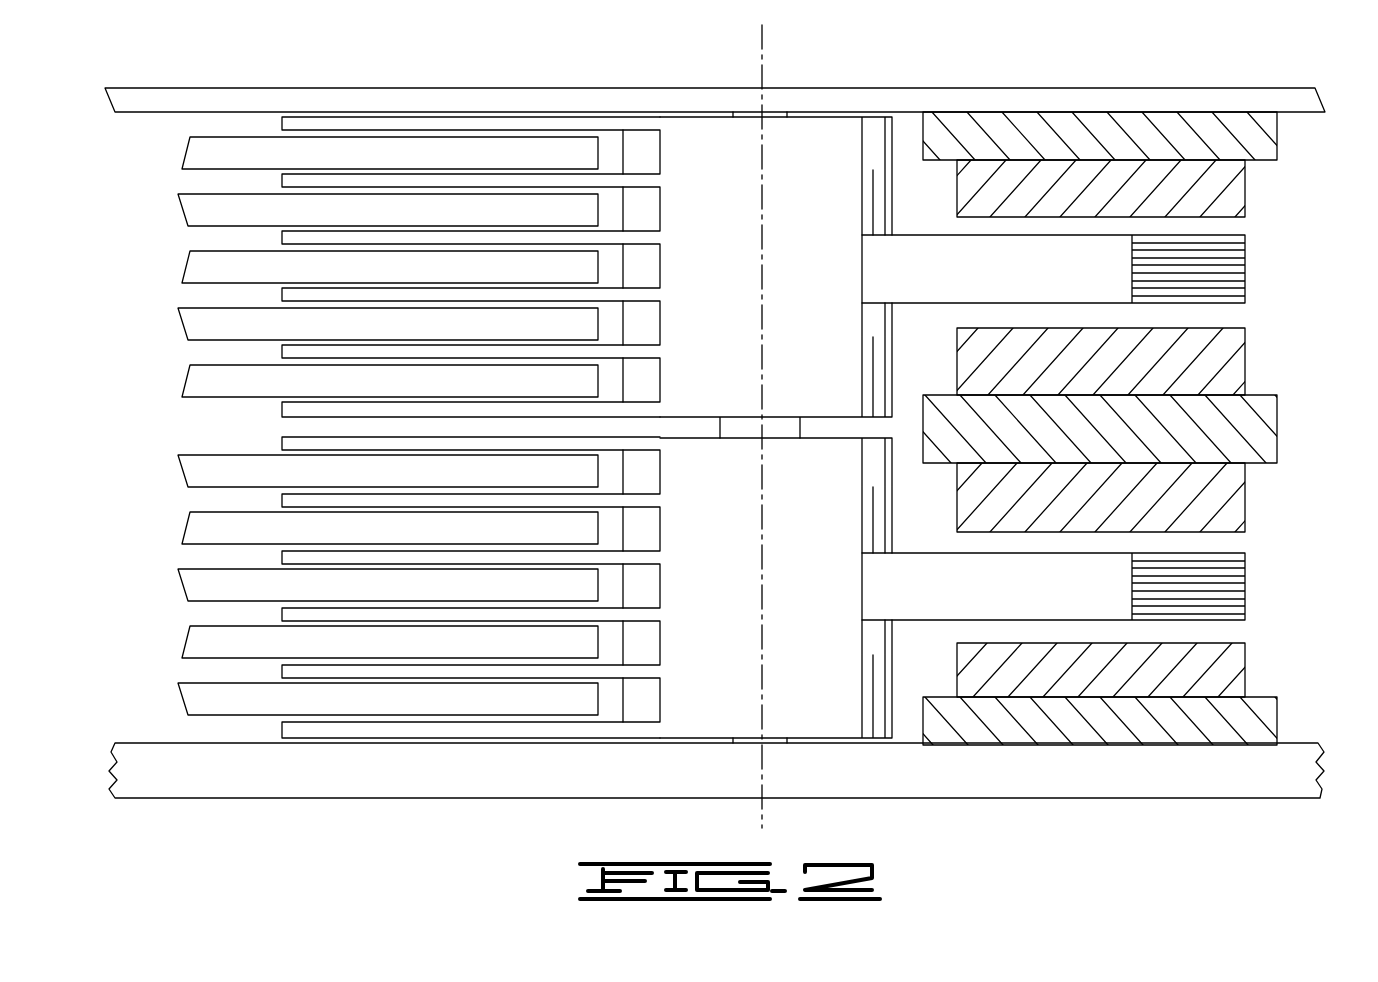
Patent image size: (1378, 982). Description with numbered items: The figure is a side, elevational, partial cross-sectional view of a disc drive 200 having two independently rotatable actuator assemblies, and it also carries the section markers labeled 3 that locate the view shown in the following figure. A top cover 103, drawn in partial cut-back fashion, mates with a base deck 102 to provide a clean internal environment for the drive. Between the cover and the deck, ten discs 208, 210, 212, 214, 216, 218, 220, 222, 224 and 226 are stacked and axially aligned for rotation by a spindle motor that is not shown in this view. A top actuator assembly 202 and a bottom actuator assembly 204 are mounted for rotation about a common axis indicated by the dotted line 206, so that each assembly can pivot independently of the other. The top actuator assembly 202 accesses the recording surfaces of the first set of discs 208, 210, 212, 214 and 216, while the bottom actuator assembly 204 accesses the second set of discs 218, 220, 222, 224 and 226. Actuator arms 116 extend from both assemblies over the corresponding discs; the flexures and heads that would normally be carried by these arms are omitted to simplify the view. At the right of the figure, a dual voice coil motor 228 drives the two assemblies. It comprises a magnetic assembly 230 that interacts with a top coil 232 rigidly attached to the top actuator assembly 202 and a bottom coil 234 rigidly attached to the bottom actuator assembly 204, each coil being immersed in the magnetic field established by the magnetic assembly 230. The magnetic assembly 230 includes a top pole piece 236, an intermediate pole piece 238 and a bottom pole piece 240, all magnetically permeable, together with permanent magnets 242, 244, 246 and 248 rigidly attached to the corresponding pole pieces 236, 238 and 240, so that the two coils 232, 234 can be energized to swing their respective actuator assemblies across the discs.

The base deck 102 is at (167, 775).
The top cover 103 is at (153, 86).
The actuator arms 116 is at (536, 410).
The disc drive 200 is at (293, 60).
The top actuator assembly 202 is at (714, 150).
The bottom actuator assembly 204 is at (824, 712).
The common axis 206 is at (762, 68).
The disc 208 is at (218, 153).
The disc 210 is at (218, 210).
The disc 212 is at (218, 267).
The disc 214 is at (218, 324).
The disc 216 is at (218, 381).
The disc 218 is at (218, 471).
The disc 220 is at (218, 528).
The disc 222 is at (218, 585).
The disc 224 is at (218, 642).
The disc 226 is at (218, 699).
The dual voice coil motor 228 is at (1000, 76).
The magnetic assembly 230 is at (1093, 77).
The top coil 232 is at (1218, 272).
The bottom coil 234 is at (1208, 583).
The top pole piece 236 is at (1247, 132).
The intermediate pole piece 238 is at (1243, 427).
The bottom pole piece 240 is at (1242, 725).
The permanent magnet 242 is at (1207, 185).
The permanent magnet 244 is at (1217, 365).
The permanent magnet 246 is at (1215, 497).
The permanent magnet 248 is at (1213, 663).
The section line 3- 3 is at (1355, 100).